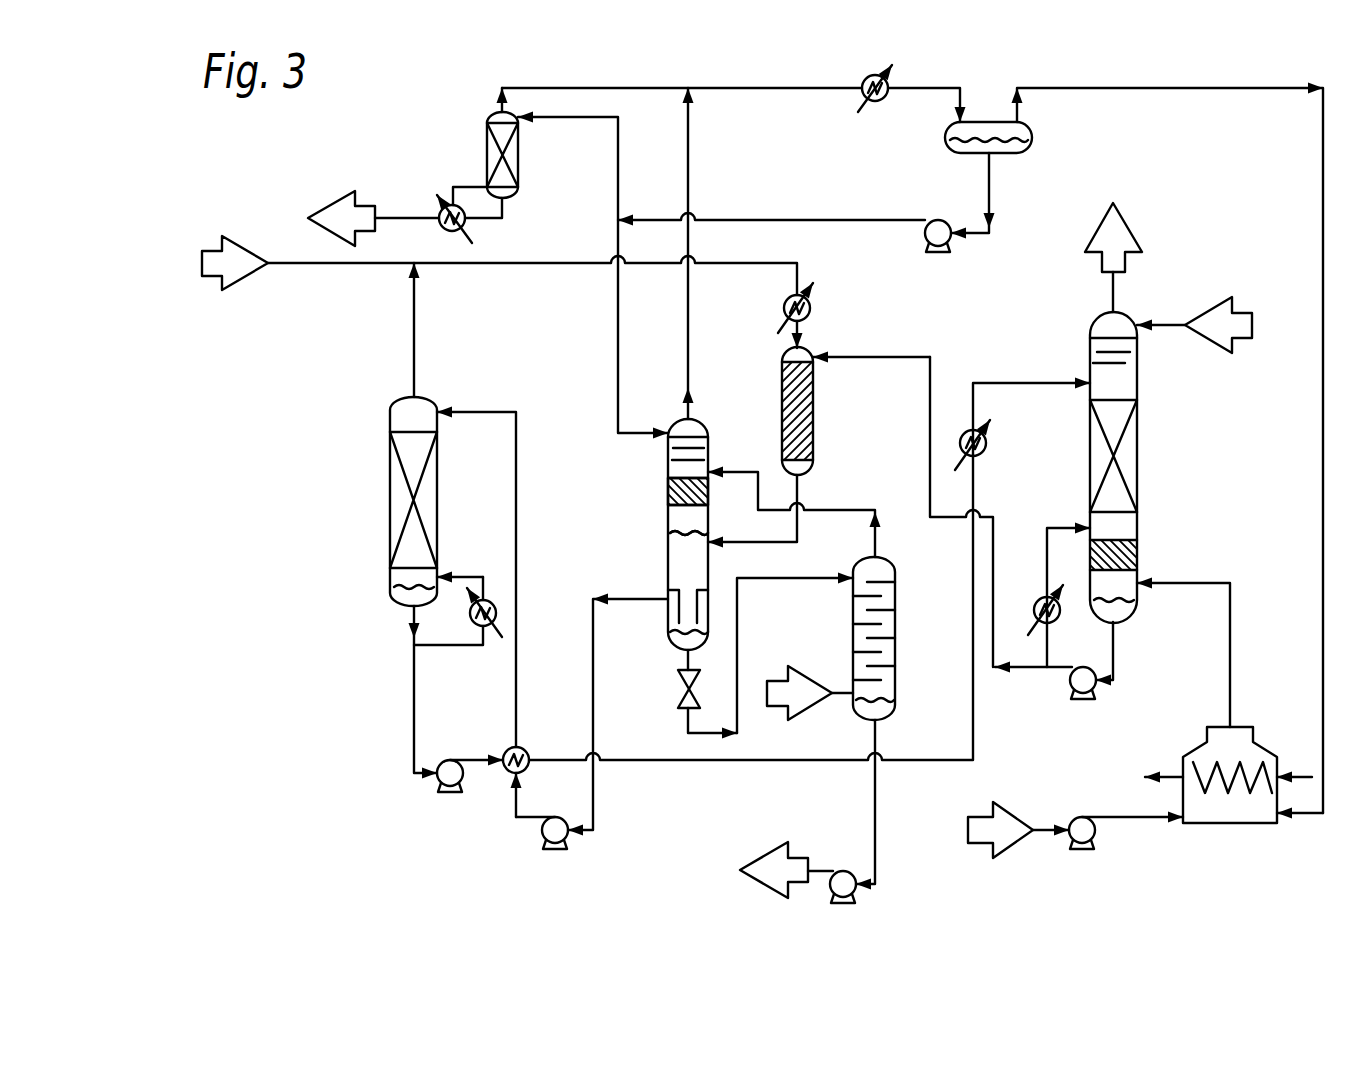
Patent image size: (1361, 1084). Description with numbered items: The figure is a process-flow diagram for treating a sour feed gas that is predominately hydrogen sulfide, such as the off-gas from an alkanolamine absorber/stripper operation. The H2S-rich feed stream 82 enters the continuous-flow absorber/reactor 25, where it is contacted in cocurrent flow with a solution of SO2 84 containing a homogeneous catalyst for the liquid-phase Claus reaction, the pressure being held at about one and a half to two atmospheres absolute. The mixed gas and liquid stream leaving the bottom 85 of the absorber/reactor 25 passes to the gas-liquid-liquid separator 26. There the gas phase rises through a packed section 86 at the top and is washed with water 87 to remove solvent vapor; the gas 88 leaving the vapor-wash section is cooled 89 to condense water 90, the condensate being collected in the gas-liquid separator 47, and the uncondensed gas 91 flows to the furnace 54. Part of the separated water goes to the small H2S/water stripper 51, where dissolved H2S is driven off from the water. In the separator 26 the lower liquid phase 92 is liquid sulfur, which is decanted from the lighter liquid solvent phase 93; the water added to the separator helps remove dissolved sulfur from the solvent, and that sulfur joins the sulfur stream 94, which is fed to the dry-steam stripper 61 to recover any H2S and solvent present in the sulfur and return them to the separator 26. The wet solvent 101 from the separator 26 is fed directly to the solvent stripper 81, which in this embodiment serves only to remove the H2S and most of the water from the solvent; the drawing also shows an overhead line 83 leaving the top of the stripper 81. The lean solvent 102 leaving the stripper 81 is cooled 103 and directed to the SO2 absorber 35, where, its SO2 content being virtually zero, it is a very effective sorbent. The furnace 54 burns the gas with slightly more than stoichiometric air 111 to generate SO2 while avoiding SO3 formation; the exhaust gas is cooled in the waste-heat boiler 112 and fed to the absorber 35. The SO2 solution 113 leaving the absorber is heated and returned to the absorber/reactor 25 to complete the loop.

The absorber/reactor 25 is at (813, 418).
The gas-liquid-liquid separator 26 is at (668, 466).
The SO2 absorber 35 is at (1138, 457).
The gas-liquid separator 47 is at (1032, 128).
The H2S/water stripper 51 is at (487, 140).
The furnace 54 is at (1197, 753).
The dry-steam stripper 61 is at (896, 626).
The solvent stripper 81 is at (390, 497).
The H2S-rich feed stream 82 is at (230, 287).
The treated gas line 83 is at (415, 377).
The solution of SO2 84 is at (872, 357).
The bottom stream of absorber/reactor 85 is at (798, 495).
The packed section 86 is at (668, 497).
The wash water 87 is at (617, 371).
The gas leaving vapor-wash section 88 is at (690, 357).
The cooler 89 is at (880, 103).
The condensed water 90 is at (990, 178).
The uncondensed gas 91 is at (1163, 88).
The liquid sulfur phase 92 is at (678, 641).
The liquid solvent phase 93 is at (668, 552).
The sulfur stream 94 is at (738, 658).
The wet solvent 101 is at (630, 600).
The lean solvent 102 is at (412, 697).
The cooler 103 is at (990, 455).
The air 111 is at (1022, 815).
The waste-heat boiler 112 is at (1252, 768).
The SO2 solution 113 is at (1114, 663).